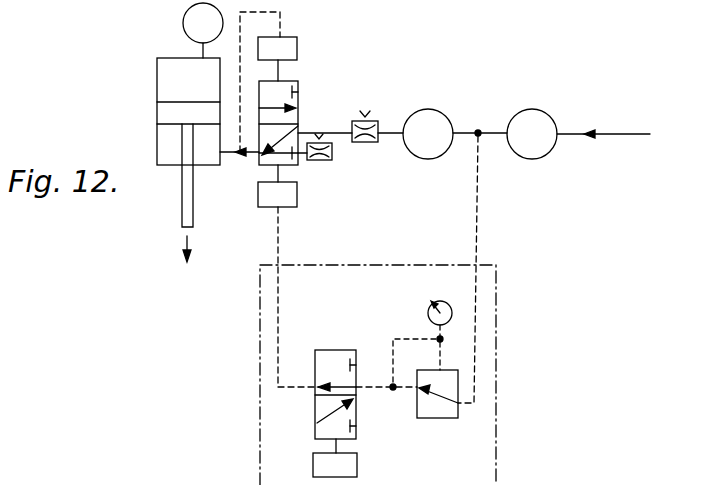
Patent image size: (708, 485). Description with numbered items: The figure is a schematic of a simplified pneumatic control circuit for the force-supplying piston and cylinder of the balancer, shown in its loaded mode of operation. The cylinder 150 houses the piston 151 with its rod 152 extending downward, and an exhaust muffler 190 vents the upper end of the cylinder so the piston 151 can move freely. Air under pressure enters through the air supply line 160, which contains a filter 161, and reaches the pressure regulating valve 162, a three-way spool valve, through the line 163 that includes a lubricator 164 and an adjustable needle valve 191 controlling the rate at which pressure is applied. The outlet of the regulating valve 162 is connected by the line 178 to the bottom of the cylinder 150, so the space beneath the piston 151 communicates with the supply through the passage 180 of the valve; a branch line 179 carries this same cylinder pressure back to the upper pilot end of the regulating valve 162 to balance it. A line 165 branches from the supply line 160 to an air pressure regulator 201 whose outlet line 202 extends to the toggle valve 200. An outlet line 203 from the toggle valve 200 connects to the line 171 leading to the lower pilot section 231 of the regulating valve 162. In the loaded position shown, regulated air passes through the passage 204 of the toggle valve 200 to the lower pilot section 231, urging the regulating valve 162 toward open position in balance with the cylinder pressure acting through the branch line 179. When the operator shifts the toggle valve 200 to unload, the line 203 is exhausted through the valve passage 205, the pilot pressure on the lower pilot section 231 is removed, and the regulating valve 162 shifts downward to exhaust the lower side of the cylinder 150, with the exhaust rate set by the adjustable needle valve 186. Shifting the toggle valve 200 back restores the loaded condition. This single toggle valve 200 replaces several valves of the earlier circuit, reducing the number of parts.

The cylinder 150 is at (157, 82).
The piston 151 is at (172, 111).
The rod 152 is at (182, 212).
The air supply line 160 is at (632, 122).
The filter 161 is at (543, 111).
The pressure regulating valve 162 is at (298, 83).
The line 163 is at (392, 131).
The lubricator 164 is at (440, 114).
The line 165 is at (478, 221).
The line 171 is at (280, 242).
The line 178 is at (252, 158).
The branch line 179 is at (283, 22).
The passage 180 is at (281, 134).
The adjustable needle valve 186 is at (333, 159).
The exhaust muffler 190 is at (183, 24).
The adjustable needle valve 191 is at (368, 120).
The toggle valve 200 is at (315, 398).
The air pressure regulator 201 is at (437, 419).
The outlet line 202 is at (372, 383).
The outlet line 203 is at (280, 283).
The passage 204 is at (333, 385).
The valve passage 205 is at (320, 424).
The pilot section 231 is at (298, 197).